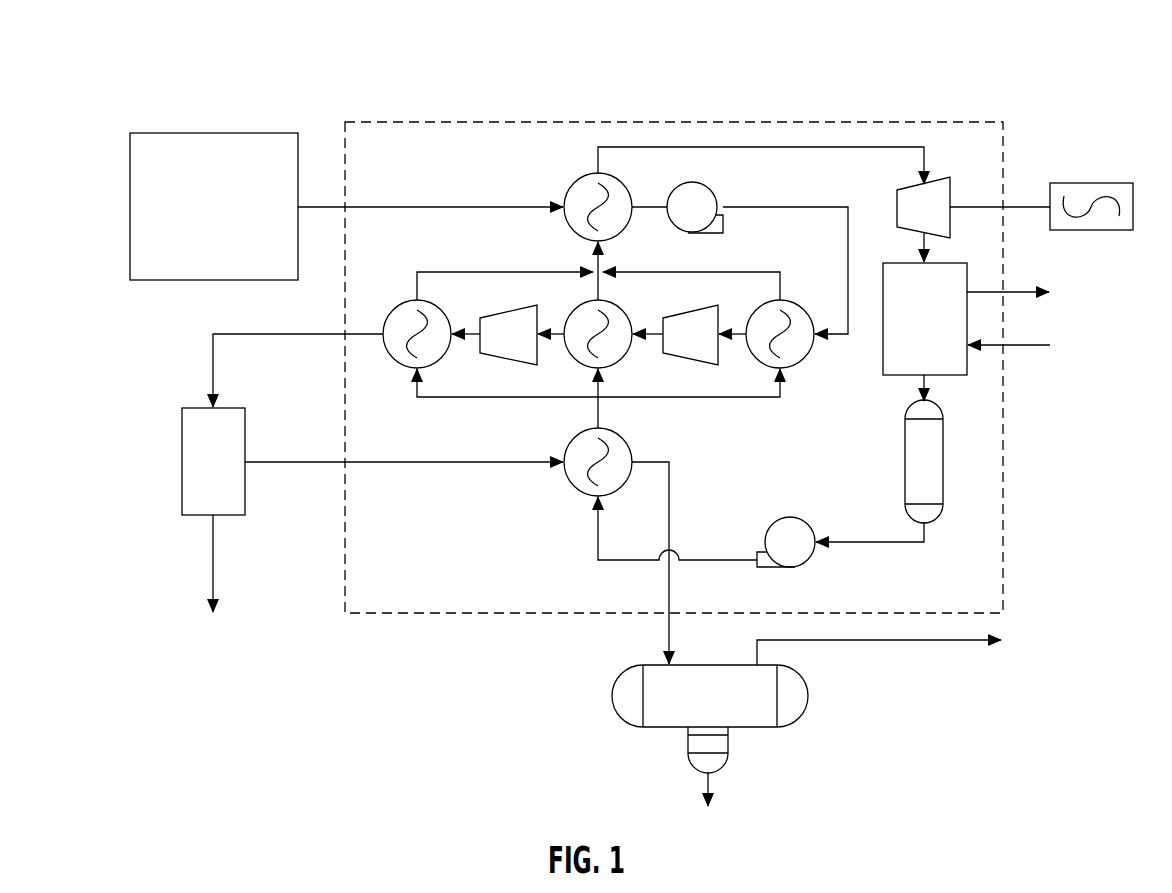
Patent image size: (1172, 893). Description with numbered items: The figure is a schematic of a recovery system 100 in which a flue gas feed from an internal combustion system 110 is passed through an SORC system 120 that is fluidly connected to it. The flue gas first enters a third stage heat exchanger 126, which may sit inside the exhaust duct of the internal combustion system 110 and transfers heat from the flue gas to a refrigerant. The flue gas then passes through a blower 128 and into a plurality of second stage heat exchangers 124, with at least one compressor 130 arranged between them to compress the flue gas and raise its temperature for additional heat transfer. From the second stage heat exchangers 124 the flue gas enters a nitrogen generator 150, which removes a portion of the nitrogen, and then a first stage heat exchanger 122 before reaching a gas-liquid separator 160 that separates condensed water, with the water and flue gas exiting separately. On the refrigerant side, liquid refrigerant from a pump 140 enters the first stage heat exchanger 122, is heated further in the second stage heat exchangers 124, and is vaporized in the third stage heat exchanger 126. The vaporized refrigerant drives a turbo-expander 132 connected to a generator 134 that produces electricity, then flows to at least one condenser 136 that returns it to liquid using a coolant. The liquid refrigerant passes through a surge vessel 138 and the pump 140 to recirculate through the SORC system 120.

The recovery system 100 is at (113, 79).
The internal combustion system 110 is at (197, 132).
The SORC system 120 is at (412, 121).
The first stage heat exchanger 122 is at (572, 440).
The second stage heat exchangers 124 is at (441, 358).
The third stage heat exchanger 126 is at (572, 182).
The blower 128 is at (711, 190).
The compressor 130 is at (512, 318).
The turbo-expander 132 is at (900, 188).
The generator 134 is at (1070, 183).
The condenser 136 is at (955, 378).
The surge vessel 138 is at (905, 437).
The pump 140 is at (795, 520).
The nitrogen generator 150 is at (182, 462).
The gas-liquid separator 160 is at (803, 696).